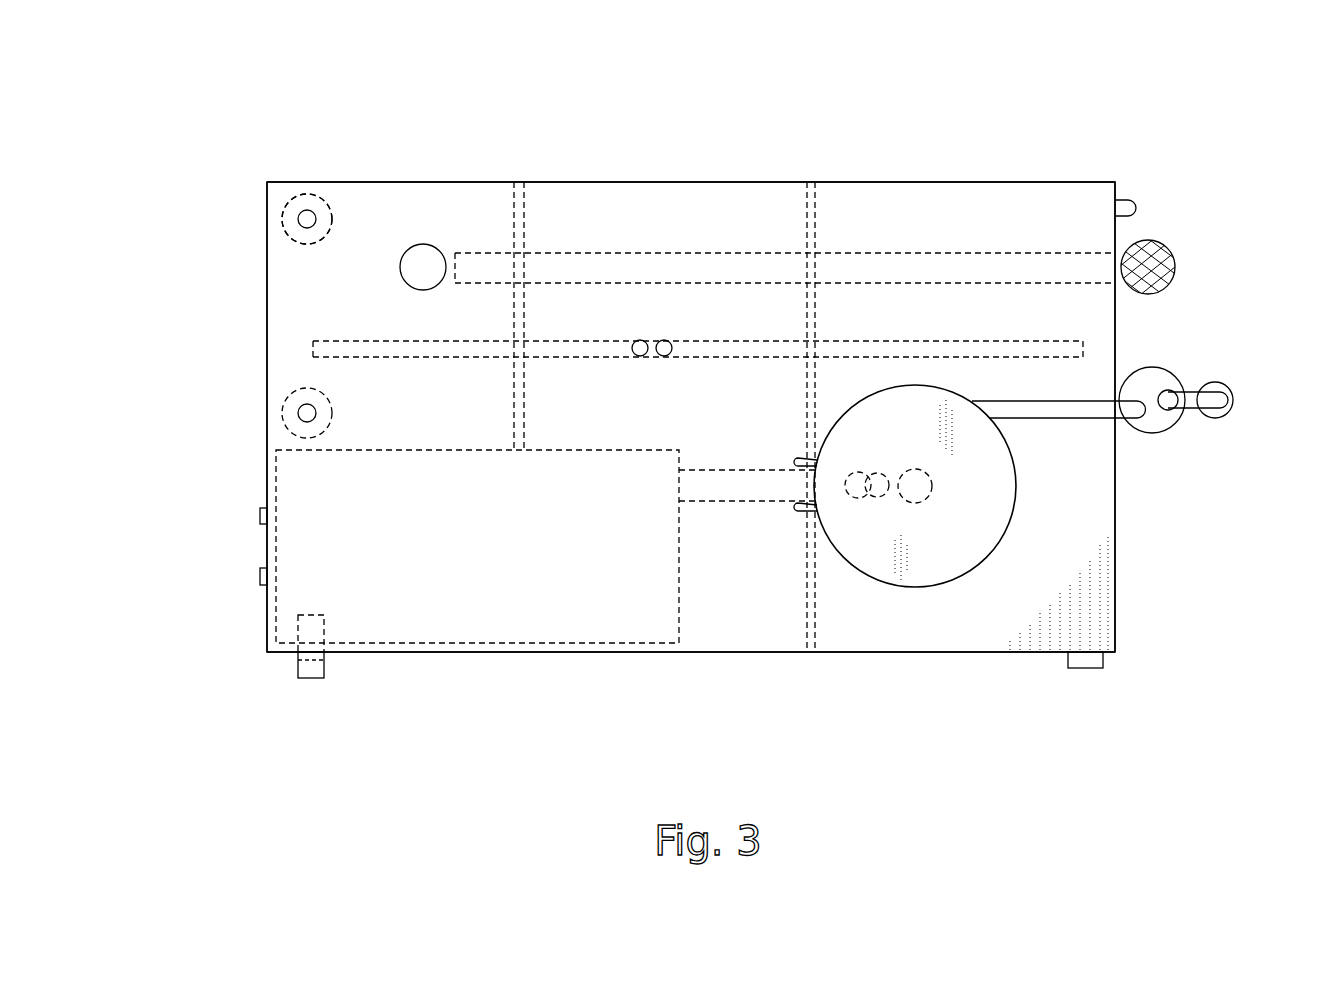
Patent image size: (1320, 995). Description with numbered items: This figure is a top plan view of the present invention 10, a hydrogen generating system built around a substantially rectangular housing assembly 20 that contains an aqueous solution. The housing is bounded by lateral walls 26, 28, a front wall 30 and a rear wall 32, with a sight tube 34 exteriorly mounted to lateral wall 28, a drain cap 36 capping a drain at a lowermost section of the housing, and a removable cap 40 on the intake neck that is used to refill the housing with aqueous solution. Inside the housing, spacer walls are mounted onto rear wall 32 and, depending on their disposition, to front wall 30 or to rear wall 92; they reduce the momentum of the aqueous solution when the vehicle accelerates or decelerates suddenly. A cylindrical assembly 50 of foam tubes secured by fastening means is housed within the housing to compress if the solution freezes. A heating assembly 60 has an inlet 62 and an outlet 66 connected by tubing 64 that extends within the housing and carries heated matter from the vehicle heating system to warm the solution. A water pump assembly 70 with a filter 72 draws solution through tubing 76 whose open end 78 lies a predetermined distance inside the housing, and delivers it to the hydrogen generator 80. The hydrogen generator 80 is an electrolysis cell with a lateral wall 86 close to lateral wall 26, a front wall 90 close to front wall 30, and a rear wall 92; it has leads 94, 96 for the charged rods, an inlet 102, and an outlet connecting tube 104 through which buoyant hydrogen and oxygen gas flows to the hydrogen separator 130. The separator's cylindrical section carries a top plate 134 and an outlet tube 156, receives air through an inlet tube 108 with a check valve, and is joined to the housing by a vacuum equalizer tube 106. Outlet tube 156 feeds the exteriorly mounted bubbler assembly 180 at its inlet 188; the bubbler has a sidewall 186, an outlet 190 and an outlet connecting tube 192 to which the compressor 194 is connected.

The present invention 10 is at (206, 104).
The housing assembly 20 is at (603, 176).
The lateral wall 26 is at (267, 268).
The lateral wall 28 is at (1117, 603).
The front wall 30 is at (569, 652).
The rear wall 32 is at (892, 182).
The sight tube 34 is at (1128, 203).
The drain cap 36 is at (1090, 670).
The removable cap 40 is at (423, 244).
The cylindrical assembly 50 is at (272, 212).
The heating assembly 60 is at (748, 333).
The inlet 62 is at (640, 340).
The tubing 64 is at (942, 340).
The outlet 66 is at (664, 340).
The water pump assembly 70 is at (1172, 243).
The filter 72 is at (1160, 268).
The tubing 76 is at (752, 252).
The open end 78 is at (448, 264).
The hydrogen generator 80 is at (467, 652).
The lateral wall 86 is at (267, 616).
The front wall 90 is at (422, 648).
The rear wall 92 is at (425, 450).
The lead 94 is at (261, 510).
The lead 96 is at (261, 572).
The inlet 102 is at (298, 668).
The outlet connecting tube 104 is at (718, 503).
The vacuum equalizer tube 106 is at (800, 514).
The inlet tube 108 is at (796, 462).
The hydrogen separator 130 is at (884, 590).
The top plate 134 is at (917, 552).
The outlet tube 156 is at (1093, 412).
The bubbler assembly 180 is at (1180, 370).
The sidewall 186 is at (1180, 425).
The inlet 188 is at (1131, 420).
The outlet 190 is at (1165, 392).
The outlet connecting tube 192 is at (1202, 385).
The compressor 194 is at (1235, 400).